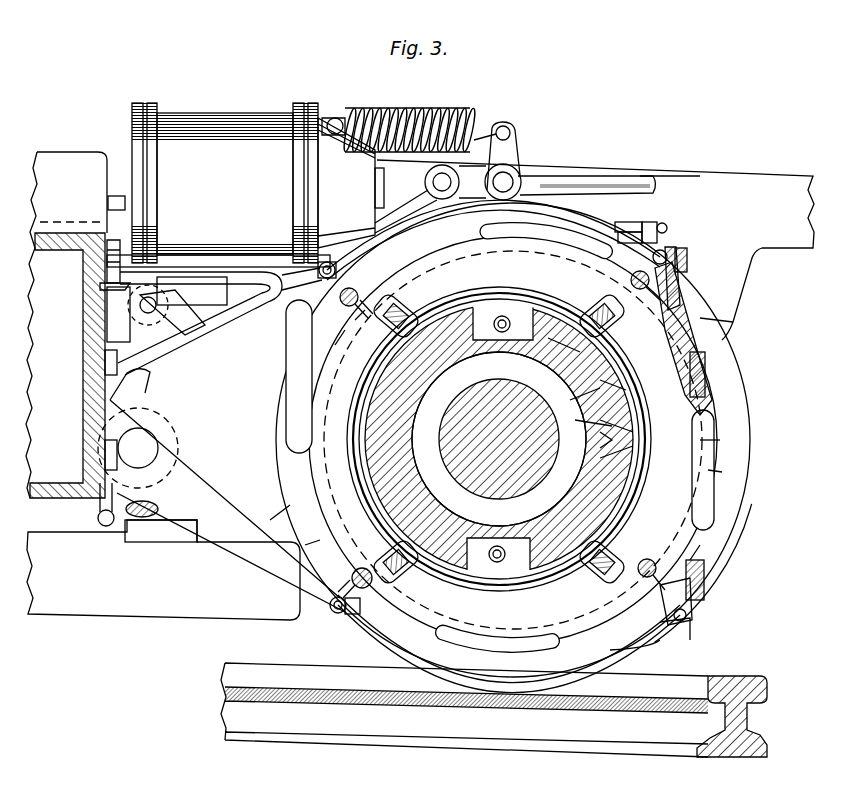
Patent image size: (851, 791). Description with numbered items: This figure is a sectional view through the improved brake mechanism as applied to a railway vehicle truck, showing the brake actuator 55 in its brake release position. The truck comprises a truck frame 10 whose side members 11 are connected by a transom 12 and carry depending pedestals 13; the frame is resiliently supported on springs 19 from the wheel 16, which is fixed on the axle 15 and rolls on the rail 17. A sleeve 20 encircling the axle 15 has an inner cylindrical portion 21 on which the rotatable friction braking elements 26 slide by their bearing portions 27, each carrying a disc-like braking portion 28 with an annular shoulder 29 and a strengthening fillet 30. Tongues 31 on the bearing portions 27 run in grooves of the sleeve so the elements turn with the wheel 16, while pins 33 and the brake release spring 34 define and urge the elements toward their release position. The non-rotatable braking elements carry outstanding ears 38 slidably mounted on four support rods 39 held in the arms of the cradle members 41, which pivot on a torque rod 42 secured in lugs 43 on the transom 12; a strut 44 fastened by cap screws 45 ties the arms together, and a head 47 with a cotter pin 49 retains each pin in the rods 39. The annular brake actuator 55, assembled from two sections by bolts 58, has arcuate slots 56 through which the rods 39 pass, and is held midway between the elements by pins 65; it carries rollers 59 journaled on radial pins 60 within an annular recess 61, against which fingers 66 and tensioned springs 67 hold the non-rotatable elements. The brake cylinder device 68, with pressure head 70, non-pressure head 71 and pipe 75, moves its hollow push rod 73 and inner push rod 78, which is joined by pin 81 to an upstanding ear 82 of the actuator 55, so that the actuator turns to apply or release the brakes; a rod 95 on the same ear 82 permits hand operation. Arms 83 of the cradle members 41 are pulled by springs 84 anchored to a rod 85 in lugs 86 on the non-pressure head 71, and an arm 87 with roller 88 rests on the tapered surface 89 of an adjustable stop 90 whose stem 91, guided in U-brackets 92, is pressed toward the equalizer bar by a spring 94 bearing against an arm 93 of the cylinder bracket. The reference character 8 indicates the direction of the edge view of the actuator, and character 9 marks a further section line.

The arrow direction indicator 8 is at (40, 560).
The section line indicator 9 is at (696, 243).
The truck frame 10 is at (690, 178).
The side members 11 is at (735, 185).
The transom 12 is at (92, 340).
The pedestals 13 is at (733, 323).
The axle 15 is at (452, 468).
The wheel 16 is at (628, 650).
The rails 17 is at (726, 676).
The springs 19 is at (146, 530).
The sleeve 20 is at (560, 372).
The inner cylindrical portion 21 is at (440, 360).
The rotatable friction braking elements 26 is at (578, 400).
The bearing portion 27 is at (587, 421).
The braking portion 28 is at (562, 367).
The annular shoulder 29 is at (626, 384).
The fillet 30 is at (590, 441).
The tongues 31 is at (460, 375).
The pins 33 is at (450, 410).
The brake release spring 34 is at (503, 334).
The ears 38 is at (392, 262).
The support rods 39 is at (348, 312).
The cradle members 41 is at (235, 515).
The torque rod 42 is at (150, 455).
The lugs 43 is at (180, 436).
The strut 44 is at (665, 224).
The cap screws 45 is at (688, 262).
The head 47 is at (650, 222).
The cotter pin 49 is at (335, 266).
The brake actuator 55 is at (715, 418).
The arcuate slots 56 is at (558, 232).
The bolts 58 is at (706, 362).
The rollers 59 is at (222, 256).
The pins 60 is at (415, 282).
The annular recess 61 is at (722, 440).
The pins 65 is at (360, 290).
The finger 66 is at (308, 314).
The spring 67 is at (672, 252).
The brake cylinder device 68 is at (200, 113).
The pressure head 70 is at (137, 104).
The non-pressure head 71 is at (313, 104).
The hollow push rod 73 is at (375, 178).
The pipe 75 is at (108, 202).
The push rod 78 is at (380, 192).
The pin 81 is at (452, 182).
The ear 82 is at (428, 199).
The arm 83 is at (519, 158).
The spring 84 is at (438, 108).
The rod 85 is at (348, 120).
The lugs 86 is at (337, 118).
The arm 87 is at (192, 290).
The roller 88 is at (160, 294).
The tapered surface 89 is at (192, 318).
The adjustable stop 90 is at (107, 315).
The stem 91 is at (98, 516).
The U-brackets 92 is at (105, 360).
The arm 93 is at (107, 262).
The spring 94 is at (100, 287).
The rod 95 is at (603, 176).